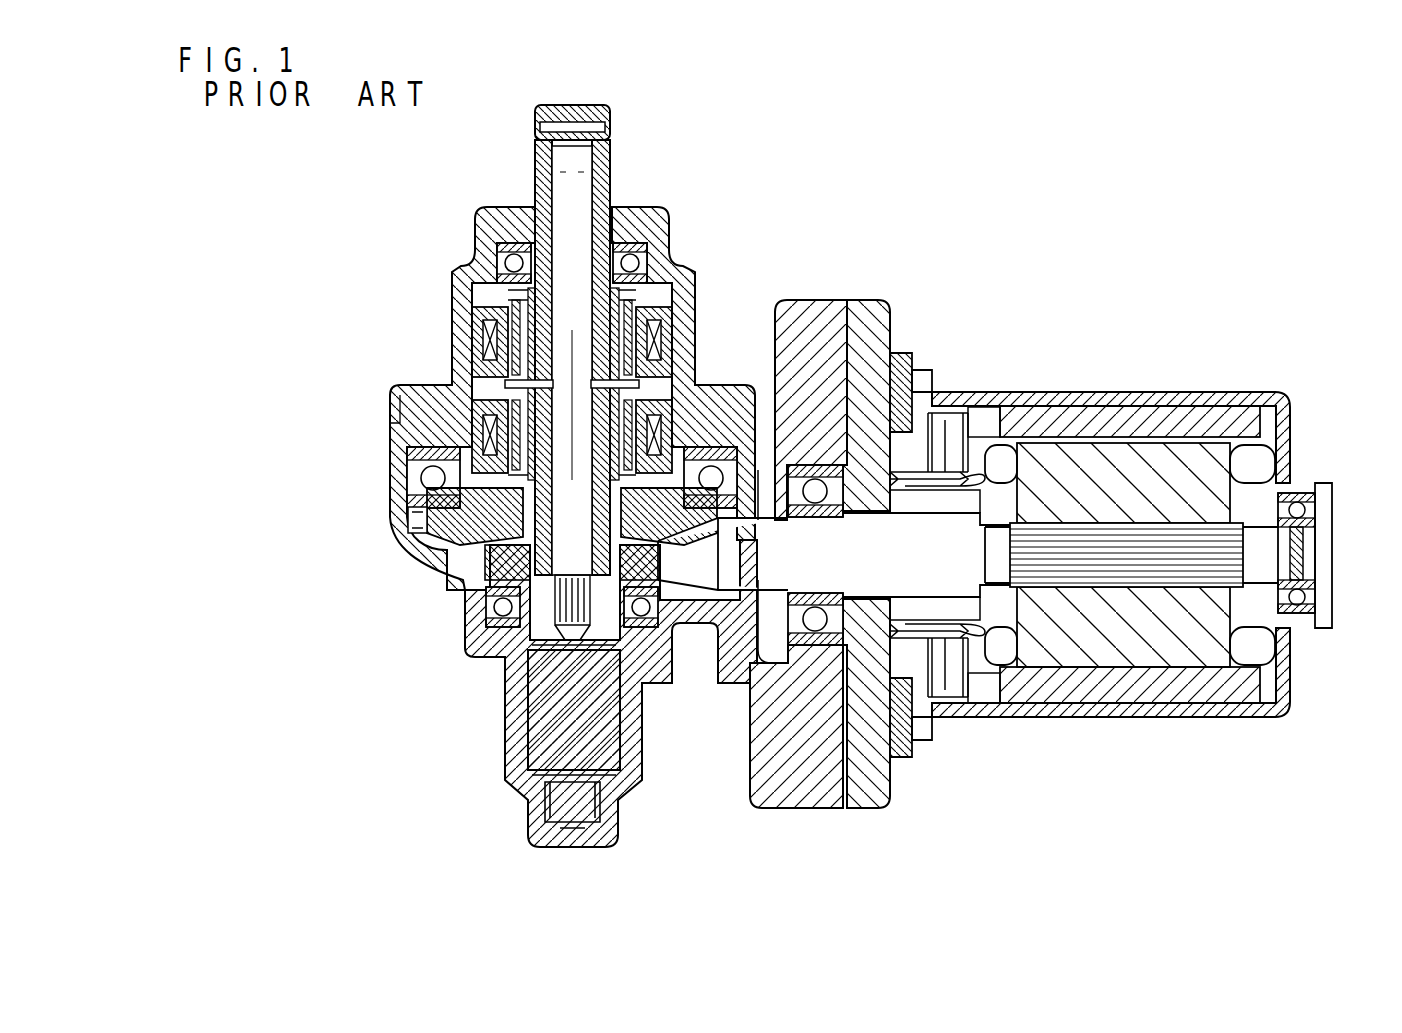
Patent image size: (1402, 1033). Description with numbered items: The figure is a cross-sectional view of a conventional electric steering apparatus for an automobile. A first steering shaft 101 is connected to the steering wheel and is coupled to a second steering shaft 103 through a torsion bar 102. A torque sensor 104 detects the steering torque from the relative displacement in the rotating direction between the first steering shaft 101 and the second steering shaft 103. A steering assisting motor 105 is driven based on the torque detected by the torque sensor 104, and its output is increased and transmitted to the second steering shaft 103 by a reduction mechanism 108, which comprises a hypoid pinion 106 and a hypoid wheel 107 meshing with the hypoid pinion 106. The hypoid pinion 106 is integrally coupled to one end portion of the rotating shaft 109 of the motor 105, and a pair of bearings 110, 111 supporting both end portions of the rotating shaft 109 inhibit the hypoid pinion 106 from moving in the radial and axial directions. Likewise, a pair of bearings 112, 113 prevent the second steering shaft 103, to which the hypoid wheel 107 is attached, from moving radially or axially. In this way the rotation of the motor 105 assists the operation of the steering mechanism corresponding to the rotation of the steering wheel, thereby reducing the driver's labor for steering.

The first steering shaft 101 is at (545, 160).
The torsion bar 102 is at (565, 232).
The second steering shaft 103 is at (470, 575).
The torque sensor 104 is at (490, 390).
The steering assisting motor 105 is at (1143, 388).
The hypoid pinion 106 is at (683, 567).
The hypoid wheel 107 is at (655, 548).
The reduction mechanism 108 is at (423, 517).
The rotating shaft 109 is at (1073, 578).
The bearing 110 is at (813, 648).
The bearing 111 is at (1305, 625).
The bearing 112 is at (405, 475).
The bearing 113 is at (470, 630).